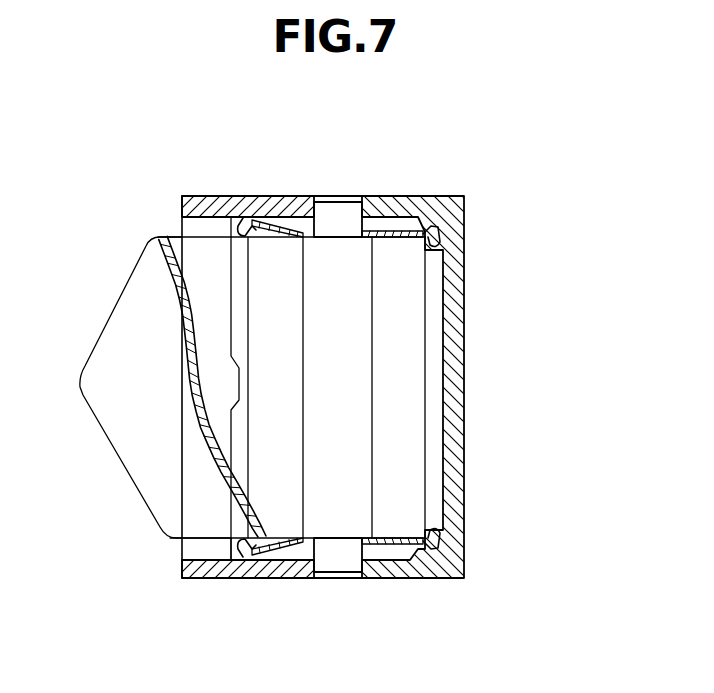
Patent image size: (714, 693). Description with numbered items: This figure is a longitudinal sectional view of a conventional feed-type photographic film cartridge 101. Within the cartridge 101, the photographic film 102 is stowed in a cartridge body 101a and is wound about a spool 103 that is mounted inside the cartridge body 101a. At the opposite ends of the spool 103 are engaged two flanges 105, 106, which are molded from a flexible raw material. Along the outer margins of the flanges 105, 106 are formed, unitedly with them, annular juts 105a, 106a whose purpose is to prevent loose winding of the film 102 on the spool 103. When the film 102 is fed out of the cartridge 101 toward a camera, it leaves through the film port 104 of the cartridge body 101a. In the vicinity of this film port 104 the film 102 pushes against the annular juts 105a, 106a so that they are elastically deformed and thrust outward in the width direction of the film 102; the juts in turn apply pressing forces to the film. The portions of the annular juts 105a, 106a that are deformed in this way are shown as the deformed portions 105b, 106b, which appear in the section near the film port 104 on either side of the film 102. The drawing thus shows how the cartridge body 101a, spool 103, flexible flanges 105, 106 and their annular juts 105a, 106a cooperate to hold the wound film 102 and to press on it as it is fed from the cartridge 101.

The cartridge 101 is at (434, 193).
The cartridge body 101a is at (464, 205).
The photographic film 102 is at (417, 339).
The spool 103 is at (343, 414).
The film port 104 is at (196, 546).
The flange 105 is at (388, 235).
The annular jut 105a is at (440, 237).
The deformed portion 105b is at (233, 222).
The flange 106 is at (385, 546).
The annular jut 106a is at (434, 537).
The deformed portion 106b is at (239, 558).